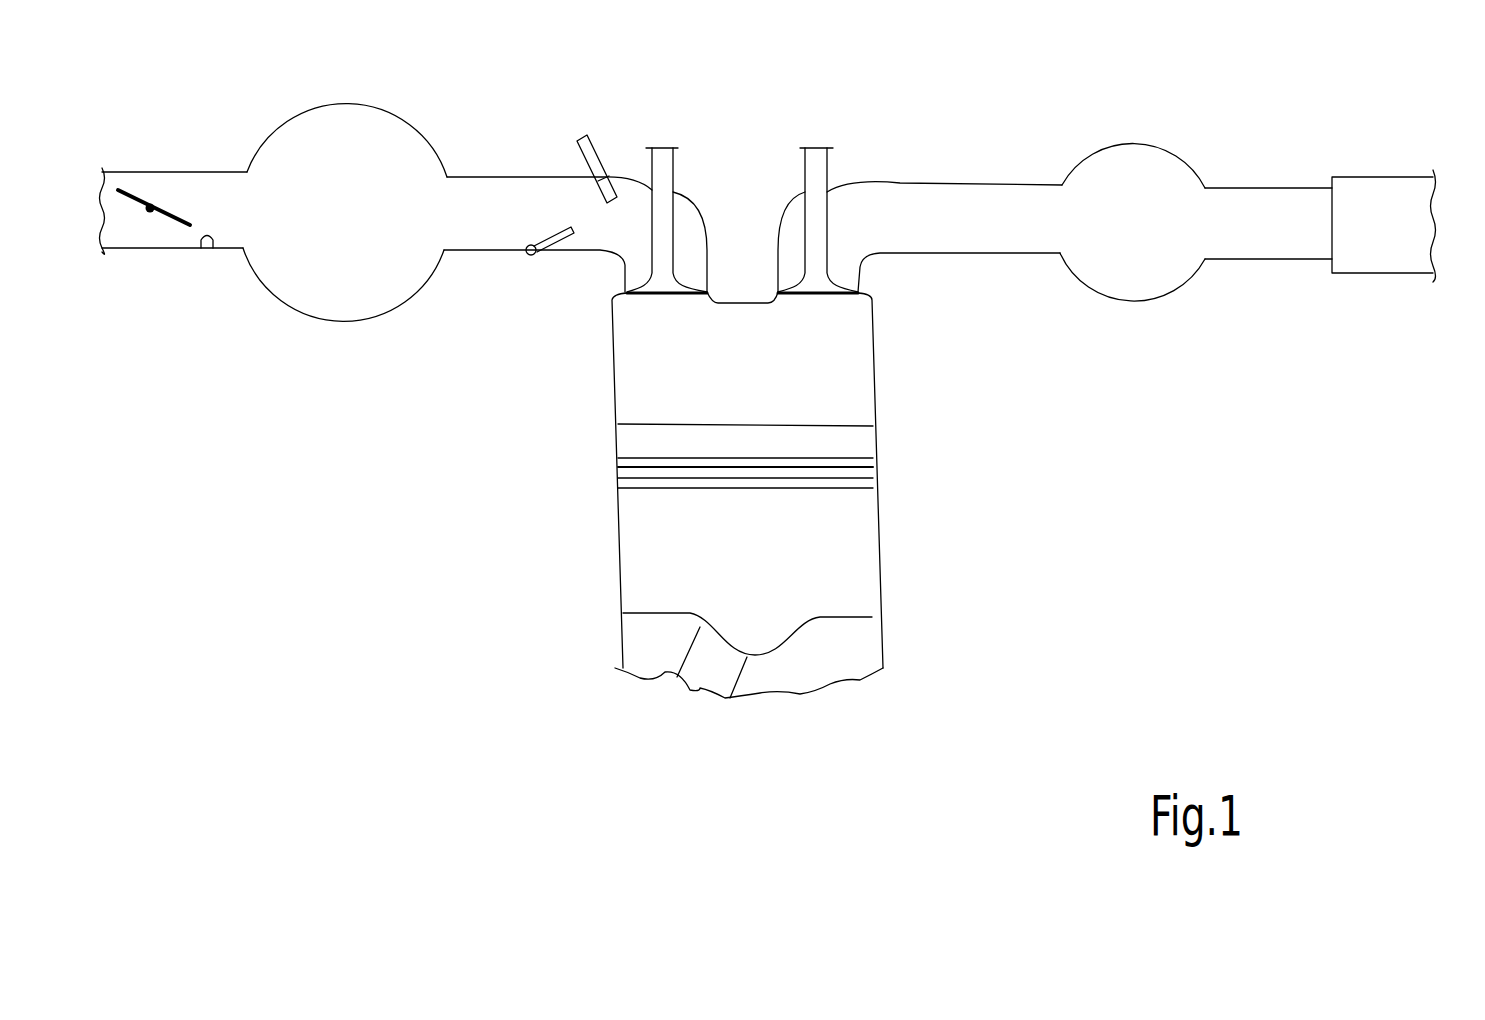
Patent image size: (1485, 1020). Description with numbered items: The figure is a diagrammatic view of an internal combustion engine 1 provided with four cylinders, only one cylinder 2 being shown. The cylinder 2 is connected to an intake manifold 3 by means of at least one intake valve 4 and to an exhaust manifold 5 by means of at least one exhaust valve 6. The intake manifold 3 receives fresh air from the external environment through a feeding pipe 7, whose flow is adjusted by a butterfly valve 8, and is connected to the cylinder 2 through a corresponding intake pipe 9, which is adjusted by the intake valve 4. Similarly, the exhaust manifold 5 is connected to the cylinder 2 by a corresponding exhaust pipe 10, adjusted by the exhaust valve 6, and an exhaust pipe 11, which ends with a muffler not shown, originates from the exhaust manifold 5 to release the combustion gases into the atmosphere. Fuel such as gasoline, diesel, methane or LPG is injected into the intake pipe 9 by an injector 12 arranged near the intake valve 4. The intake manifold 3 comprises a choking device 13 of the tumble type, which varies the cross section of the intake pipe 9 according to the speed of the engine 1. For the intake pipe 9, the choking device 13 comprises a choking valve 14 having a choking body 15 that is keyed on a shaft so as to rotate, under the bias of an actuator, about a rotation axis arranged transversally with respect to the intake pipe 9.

The internal combustion engine 1 is at (406, 524).
The cylinder 2 is at (866, 352).
The intake manifold 3 is at (344, 300).
The intake valve 4 is at (665, 190).
The exhaust manifold 5 is at (1146, 289).
The exhaust valve 6 is at (815, 190).
The feeding pipe 7 is at (208, 250).
The butterfly valve 8 is at (148, 196).
The intake pipe 9 is at (463, 238).
The exhaust pipe 10 is at (967, 238).
The exhaust pipe 11 is at (1360, 190).
The injector 12 is at (592, 148).
The choking device 13 is at (533, 143).
The choking valve 14 is at (527, 262).
The choking body 15 is at (562, 248).